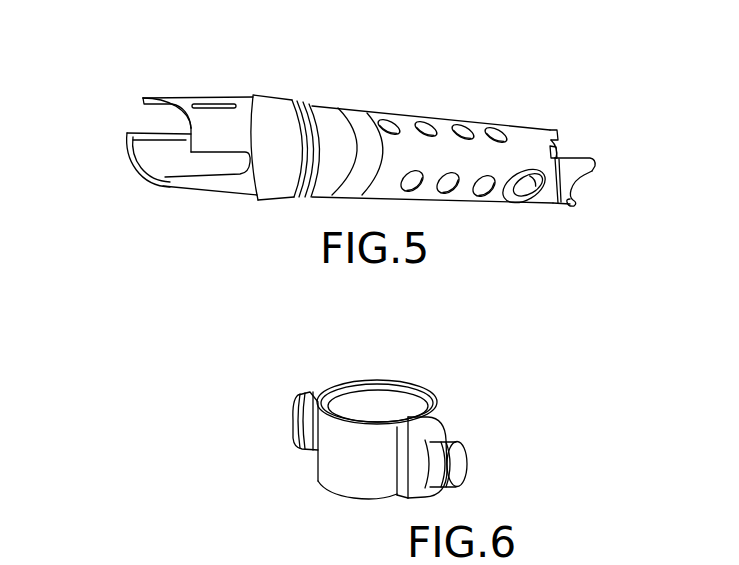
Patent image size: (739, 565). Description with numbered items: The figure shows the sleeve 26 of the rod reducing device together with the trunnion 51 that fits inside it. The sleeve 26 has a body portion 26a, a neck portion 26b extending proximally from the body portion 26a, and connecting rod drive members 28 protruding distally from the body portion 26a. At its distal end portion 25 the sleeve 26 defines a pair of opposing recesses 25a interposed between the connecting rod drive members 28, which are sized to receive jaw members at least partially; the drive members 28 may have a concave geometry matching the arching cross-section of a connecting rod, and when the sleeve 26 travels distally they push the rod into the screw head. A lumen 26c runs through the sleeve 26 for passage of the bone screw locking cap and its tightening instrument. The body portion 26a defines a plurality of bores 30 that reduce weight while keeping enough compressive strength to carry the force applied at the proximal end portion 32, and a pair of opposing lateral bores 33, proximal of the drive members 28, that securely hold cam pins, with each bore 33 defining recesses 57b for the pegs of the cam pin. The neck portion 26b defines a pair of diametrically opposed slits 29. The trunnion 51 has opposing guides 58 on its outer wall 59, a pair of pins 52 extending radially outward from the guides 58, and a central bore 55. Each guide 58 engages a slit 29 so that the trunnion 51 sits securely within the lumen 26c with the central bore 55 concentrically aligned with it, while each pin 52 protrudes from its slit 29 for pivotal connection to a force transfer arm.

In FIG. 5, the sleeve 26 is at (345, 67).
In FIG. 5, the body portion 26a is at (525, 135).
In FIG. 5, the neck portion 26b is at (260, 112).
In FIG. 5, the lumen 26c is at (153, 162).
In FIG. 5, the proximal end portion 32 is at (188, 105).
In FIG. 5, the slits 29 is at (217, 185).
In FIG. 5, the bores 30 is at (460, 120).
In FIG. 5, the opposing bores 33 is at (530, 192).
In FIG. 5, the distal end portion 25 is at (566, 160).
In FIG. 5, the recesses 25a is at (556, 158).
In FIG. 5, the recesses 57b is at (550, 146).
In FIG. 5, the connecting rod drive members 28 is at (580, 177).
In FIG. 6, the trunnion 51 is at (493, 420).
In FIG. 6, the pins 52 is at (293, 427).
In FIG. 6, the central bore 55 is at (373, 400).
In FIG. 6, the guides 58 is at (433, 427).
In FIG. 6, the outer wall 59 is at (340, 470).